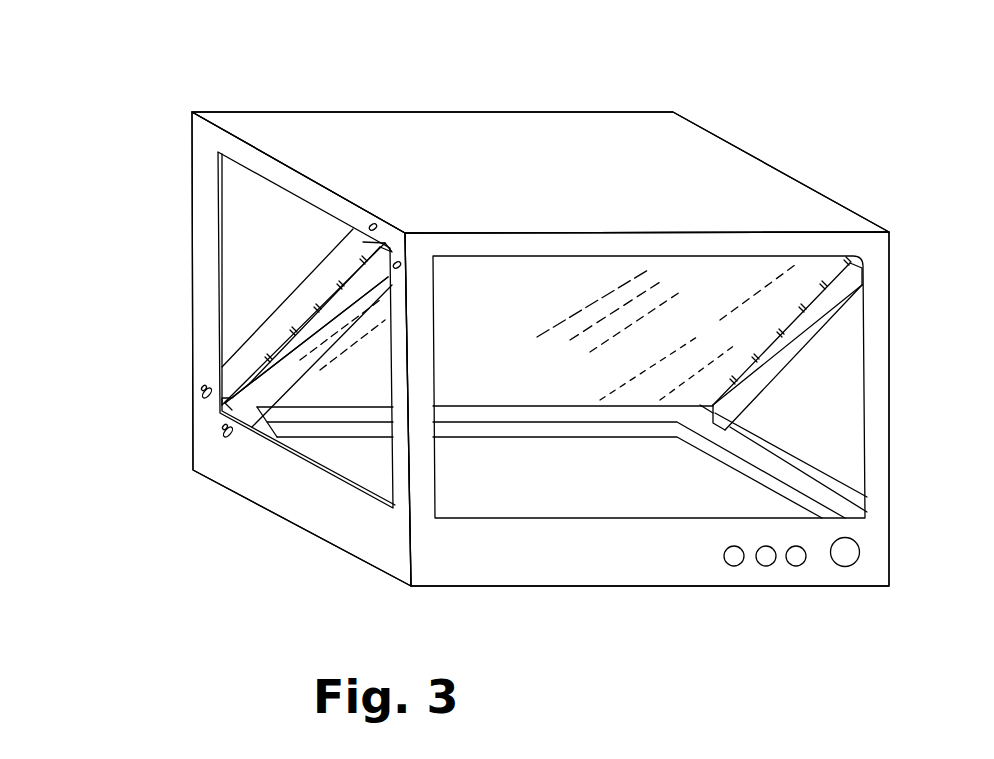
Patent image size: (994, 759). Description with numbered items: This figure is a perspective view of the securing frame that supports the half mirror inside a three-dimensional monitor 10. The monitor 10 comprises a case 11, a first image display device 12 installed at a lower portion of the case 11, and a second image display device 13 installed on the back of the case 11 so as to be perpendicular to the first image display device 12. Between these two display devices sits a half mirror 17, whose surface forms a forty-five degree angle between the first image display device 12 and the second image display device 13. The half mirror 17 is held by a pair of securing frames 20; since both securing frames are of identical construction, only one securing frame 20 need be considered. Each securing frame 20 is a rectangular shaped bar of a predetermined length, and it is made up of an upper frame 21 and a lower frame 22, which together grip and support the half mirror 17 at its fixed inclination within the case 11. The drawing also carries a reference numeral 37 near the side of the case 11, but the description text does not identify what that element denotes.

The 3D monitor 10 is at (115, 57).
The case 11 is at (518, 135).
The first image display device 12 is at (603, 497).
The second image display device 13 is at (287, 228).
The half mirror 17 is at (371, 395).
The securing frame 20 is at (57, 258).
The upper frame 21 is at (268, 332).
The lower frame 22 is at (268, 377).
The fastening screws 37 is at (243, 457).